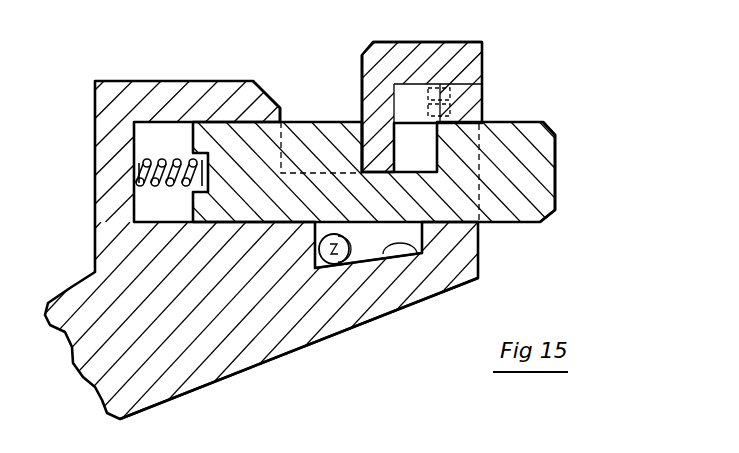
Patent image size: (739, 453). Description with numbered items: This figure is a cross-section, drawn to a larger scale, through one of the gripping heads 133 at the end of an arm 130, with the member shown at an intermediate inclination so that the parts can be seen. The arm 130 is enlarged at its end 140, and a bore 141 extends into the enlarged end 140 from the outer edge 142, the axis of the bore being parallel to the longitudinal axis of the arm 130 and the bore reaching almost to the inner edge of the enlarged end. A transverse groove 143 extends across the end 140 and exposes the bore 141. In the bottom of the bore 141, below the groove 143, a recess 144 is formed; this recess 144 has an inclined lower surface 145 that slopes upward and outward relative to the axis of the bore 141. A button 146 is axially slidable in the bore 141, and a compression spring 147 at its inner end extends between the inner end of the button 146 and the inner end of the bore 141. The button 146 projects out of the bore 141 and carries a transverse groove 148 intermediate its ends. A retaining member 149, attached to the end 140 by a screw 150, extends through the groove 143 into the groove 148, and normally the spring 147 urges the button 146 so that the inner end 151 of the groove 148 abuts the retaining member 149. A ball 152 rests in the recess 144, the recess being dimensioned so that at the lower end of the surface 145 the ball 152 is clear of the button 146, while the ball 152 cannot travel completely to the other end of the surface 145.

The arm 130 is at (288, 350).
The gripping head 133 is at (217, 72).
The enlarged end 140 is at (104, 180).
The bore 141 is at (262, 101).
The outer edge 142 is at (483, 113).
The transverse groove 143 is at (284, 121).
The recess 144 is at (403, 235).
The inclined lower surface 145 is at (412, 253).
The button 146 is at (545, 124).
The compression spring 147 is at (134, 165).
The transverse groove 148 is at (418, 148).
The retaining member 149 is at (383, 60).
The screw 150 is at (482, 64).
The inner end of the groove 151 is at (380, 104).
The ball 152 is at (338, 267).